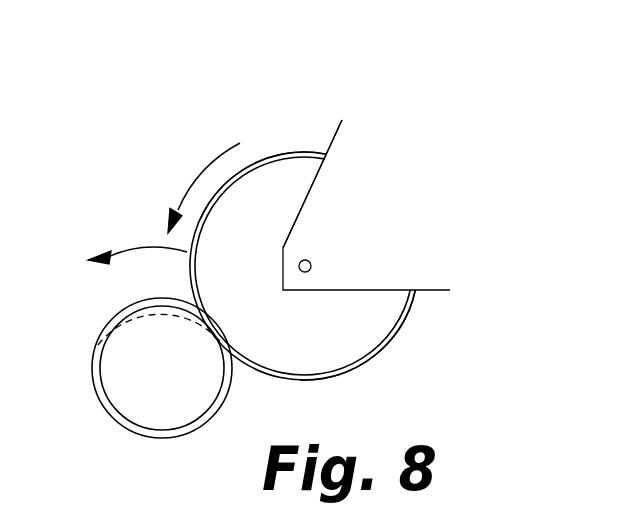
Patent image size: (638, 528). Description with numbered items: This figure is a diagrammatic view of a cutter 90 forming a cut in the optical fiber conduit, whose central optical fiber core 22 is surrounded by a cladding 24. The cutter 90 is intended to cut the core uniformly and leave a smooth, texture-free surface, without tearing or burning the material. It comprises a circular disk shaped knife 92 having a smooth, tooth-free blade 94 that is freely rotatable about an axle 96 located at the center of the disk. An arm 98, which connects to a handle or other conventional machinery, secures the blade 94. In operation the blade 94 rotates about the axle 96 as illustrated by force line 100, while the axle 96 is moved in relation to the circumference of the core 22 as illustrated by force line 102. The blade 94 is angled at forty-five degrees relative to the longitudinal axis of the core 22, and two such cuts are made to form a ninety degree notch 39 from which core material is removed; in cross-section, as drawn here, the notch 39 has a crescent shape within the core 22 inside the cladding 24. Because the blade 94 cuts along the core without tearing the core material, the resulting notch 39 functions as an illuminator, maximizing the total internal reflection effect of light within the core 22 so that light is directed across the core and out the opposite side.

The optical fiber core 22 is at (174, 407).
The cladding 24 is at (198, 431).
The notch 39 is at (113, 313).
The cutter 90 is at (407, 345).
The circular disk shaped knife 92 is at (263, 164).
The blade 94 is at (368, 362).
The axle 96 is at (311, 263).
The arm 98 is at (333, 140).
The force line 100 is at (210, 162).
The force line 102 is at (127, 247).